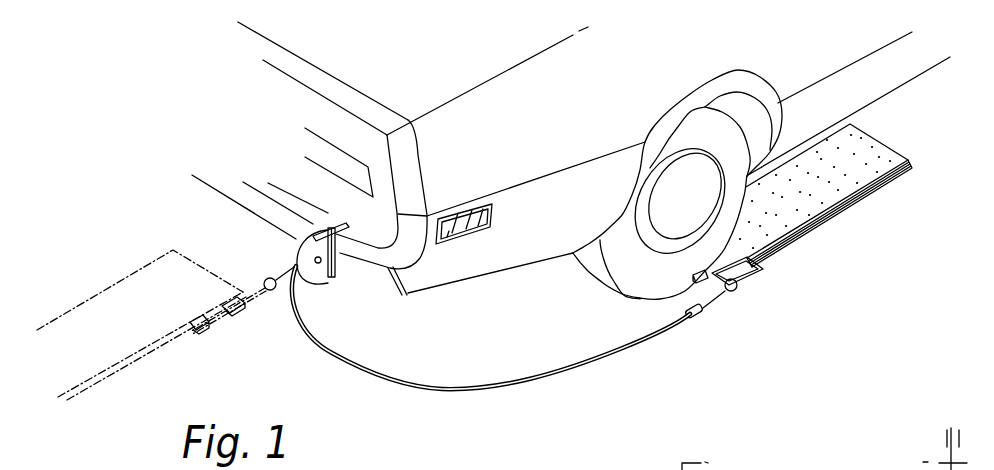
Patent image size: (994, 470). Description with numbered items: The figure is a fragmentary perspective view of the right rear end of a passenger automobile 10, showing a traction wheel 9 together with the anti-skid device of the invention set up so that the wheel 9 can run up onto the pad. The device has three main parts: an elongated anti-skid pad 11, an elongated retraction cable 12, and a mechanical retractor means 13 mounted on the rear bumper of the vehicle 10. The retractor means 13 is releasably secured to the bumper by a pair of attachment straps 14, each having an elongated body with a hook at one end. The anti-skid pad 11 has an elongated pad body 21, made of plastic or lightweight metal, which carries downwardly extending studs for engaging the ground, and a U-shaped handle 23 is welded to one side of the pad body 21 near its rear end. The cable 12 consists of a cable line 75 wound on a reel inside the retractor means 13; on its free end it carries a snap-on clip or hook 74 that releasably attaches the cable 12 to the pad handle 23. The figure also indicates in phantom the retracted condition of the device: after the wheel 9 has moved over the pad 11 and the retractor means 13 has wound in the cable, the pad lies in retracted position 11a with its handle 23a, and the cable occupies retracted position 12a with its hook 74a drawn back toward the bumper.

The vehicle wheel 9 is at (636, 286).
The right rear end of passenger automobile 10 is at (511, 276).
The anti-skid pad 11 is at (839, 188).
The retracted position of anti-skid pad 11a is at (142, 360).
The retraction cable 12 is at (491, 357).
The retracted position of retraction cable 12a is at (279, 271).
The retractor means 13 is at (321, 286).
The attachment strap 14 is at (330, 197).
The pad body 21 is at (868, 148).
The U-shaped handle 23 is at (752, 275).
The U-shaped handle in retracted position 23a is at (200, 334).
The snap-on clip or hook 74 is at (731, 296).
The snap-on clip or hook in retracted position 74a is at (244, 318).
The cable line 75 is at (432, 386).